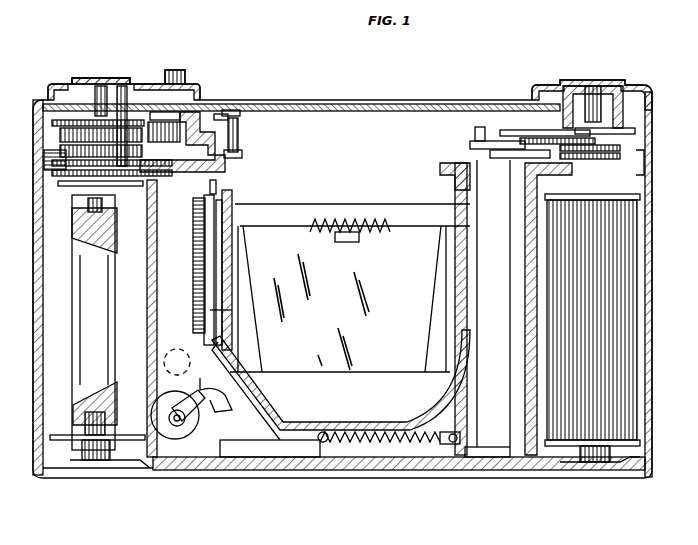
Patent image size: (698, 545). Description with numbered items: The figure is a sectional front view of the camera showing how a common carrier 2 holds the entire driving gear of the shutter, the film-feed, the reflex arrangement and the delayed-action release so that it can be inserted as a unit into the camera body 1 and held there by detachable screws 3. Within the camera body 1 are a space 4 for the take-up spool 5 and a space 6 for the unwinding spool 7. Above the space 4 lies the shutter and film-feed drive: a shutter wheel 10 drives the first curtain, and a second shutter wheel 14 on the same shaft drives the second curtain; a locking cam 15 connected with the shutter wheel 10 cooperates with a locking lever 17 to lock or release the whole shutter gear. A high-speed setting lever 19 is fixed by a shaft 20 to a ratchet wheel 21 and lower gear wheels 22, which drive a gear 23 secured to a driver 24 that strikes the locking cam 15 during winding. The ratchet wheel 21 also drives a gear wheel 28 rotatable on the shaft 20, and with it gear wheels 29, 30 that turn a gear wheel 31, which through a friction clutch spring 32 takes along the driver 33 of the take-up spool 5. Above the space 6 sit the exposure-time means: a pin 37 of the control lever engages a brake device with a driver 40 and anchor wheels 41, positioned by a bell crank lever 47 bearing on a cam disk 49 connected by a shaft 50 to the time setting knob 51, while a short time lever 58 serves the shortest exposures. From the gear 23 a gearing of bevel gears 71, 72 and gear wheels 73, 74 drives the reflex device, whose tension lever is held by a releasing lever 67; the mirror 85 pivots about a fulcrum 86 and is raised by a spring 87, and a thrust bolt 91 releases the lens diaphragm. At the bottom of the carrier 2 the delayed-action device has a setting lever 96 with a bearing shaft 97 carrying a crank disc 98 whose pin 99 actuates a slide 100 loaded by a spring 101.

The camera body 1 is at (305, 468).
The carrier 2 is at (258, 410).
The screws 3 is at (40, 140).
The space for take-up spool 4 is at (68, 405).
The take-up spool 5 is at (77, 440).
The space for unwinding spool 6 is at (640, 420).
The unwinding spool 7 is at (583, 425).
The shutter wheel 10 is at (231, 130).
The shutter wheel 14 is at (243, 152).
The locking cam 15 is at (182, 128).
The locking lever 17 is at (203, 128).
The high-speed setting lever 19 is at (176, 70).
The shaft 20 is at (72, 142).
The ratchet wheel 21 is at (110, 130).
The lower gear wheels 22 is at (62, 120).
The gear 23 is at (222, 116).
The driver 24 is at (187, 115).
The gear wheel 28 is at (52, 160).
The gear wheel 29 is at (130, 118).
The gear wheel 30 is at (183, 265).
The gear wheel 31 is at (120, 92).
The friction clutch spring 32 is at (85, 92).
The driver 33 is at (100, 110).
The pin 37 is at (508, 140).
The driver 40 is at (606, 147).
The anchor wheels 41 is at (640, 152).
The bell crank lever 47 is at (555, 140).
The cam disk 49 is at (594, 130).
The shaft 50 is at (598, 150).
The time setting knob 51 is at (560, 100).
The short time lever 58 is at (480, 127).
The releasing lever 67 is at (225, 163).
The bevel gear 71 is at (236, 148).
The bevel gear 72 is at (238, 165).
The gear wheel 73 is at (250, 180).
The gear wheel 74 is at (262, 215).
The mirror 85 is at (342, 443).
The fulcrum 86 is at (413, 224).
The spring 87 is at (382, 224).
The thrust bolt 91 is at (183, 428).
The setting lever 96 is at (177, 362).
The bearing shaft 97 is at (165, 432).
The crank disc 98 is at (180, 443).
The pin 99 is at (230, 405).
The slide 100 is at (258, 445).
The spring 101 is at (428, 445).